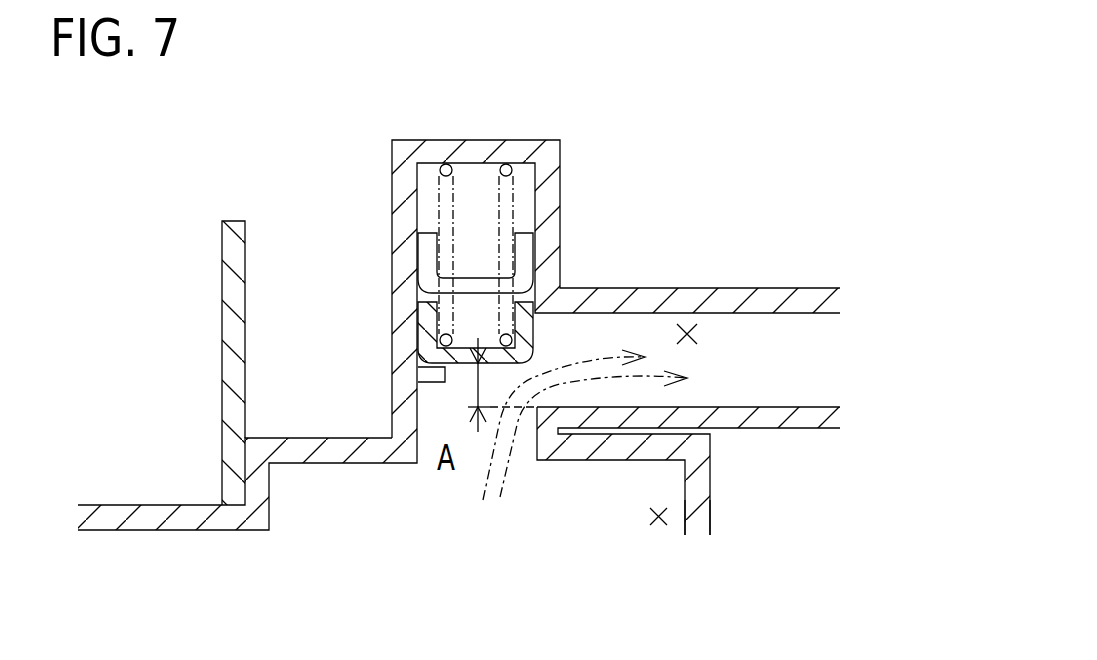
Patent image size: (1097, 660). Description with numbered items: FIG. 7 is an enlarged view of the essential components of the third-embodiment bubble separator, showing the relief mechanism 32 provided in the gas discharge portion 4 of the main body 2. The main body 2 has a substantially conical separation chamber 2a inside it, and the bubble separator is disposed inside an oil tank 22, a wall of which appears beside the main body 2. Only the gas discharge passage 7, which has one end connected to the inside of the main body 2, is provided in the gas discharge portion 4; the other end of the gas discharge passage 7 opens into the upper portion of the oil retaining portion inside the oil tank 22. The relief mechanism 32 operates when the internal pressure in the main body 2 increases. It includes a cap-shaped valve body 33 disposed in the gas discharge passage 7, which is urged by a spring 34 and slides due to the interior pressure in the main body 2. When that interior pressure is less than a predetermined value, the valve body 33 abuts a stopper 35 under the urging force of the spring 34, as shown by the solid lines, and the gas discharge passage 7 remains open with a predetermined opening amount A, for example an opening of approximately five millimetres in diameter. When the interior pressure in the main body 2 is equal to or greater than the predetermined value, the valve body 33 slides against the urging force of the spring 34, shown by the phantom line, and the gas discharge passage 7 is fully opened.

The main body 2 is at (700, 466).
The separation chamber 2a is at (660, 517).
The gas discharge portion 4 is at (402, 281).
The gas discharge passage 7 is at (686, 332).
The oil tank 22 is at (236, 369).
The relief mechanism 32 is at (378, 216).
The valve body 33 is at (418, 312).
The spring 34 is at (514, 206).
The stopper 35 is at (420, 379).